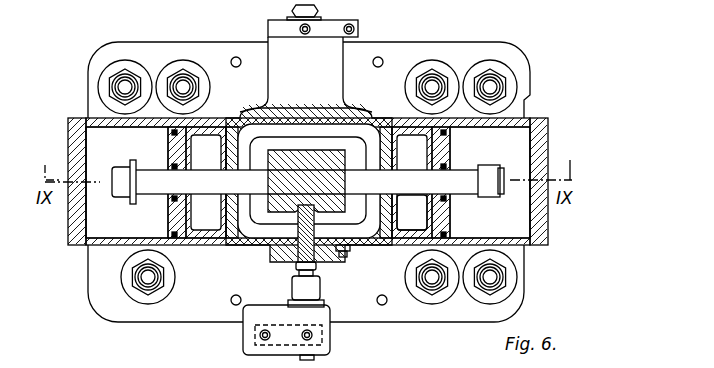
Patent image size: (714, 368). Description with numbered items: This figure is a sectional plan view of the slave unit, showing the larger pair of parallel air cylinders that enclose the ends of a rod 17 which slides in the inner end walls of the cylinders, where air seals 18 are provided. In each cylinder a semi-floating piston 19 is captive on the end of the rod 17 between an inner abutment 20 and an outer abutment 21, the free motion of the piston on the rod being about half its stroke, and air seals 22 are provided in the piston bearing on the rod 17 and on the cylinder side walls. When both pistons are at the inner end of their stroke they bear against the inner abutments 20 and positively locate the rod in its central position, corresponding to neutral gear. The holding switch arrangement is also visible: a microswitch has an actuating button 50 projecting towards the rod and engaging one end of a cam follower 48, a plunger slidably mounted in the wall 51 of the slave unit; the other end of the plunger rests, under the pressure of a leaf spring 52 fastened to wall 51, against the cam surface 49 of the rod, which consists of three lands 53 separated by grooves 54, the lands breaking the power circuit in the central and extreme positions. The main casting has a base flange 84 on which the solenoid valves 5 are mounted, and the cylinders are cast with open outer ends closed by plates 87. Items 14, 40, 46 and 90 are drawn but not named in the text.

The solenoid valve 5 is at (178, 62).
The mounting hole 14 is at (232, 58).
The rod 17 is at (412, 212).
The air seal 18 is at (228, 198).
The semi-floating piston 19 is at (175, 210).
The inner abutment 20 is at (185, 184).
The outer abutment 21 is at (126, 166).
The air seal 22 is at (173, 160).
The left end assembly 40 is at (114, 144).
The right end assembly 46 is at (524, 225).
The cam follower 48 is at (282, 232).
The cam surface 49 is at (344, 252).
The actuating button 50 is at (318, 282).
The wall 51 is at (297, 250).
The leaf spring 52 is at (313, 252).
The land 53 is at (335, 198).
The groove 54 is at (292, 222).
The base flange 84 is at (207, 309).
The plate 87 is at (268, 25).
The nut 90 is at (506, 70).